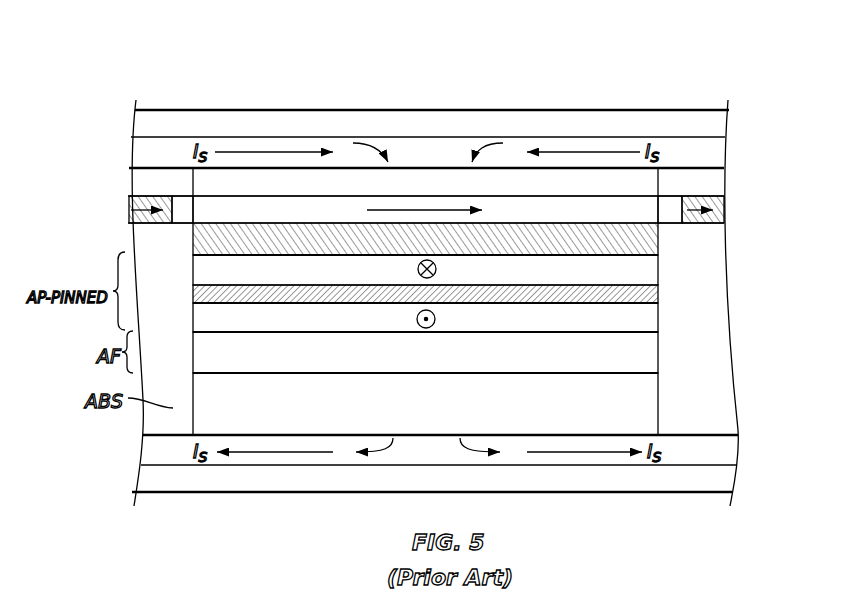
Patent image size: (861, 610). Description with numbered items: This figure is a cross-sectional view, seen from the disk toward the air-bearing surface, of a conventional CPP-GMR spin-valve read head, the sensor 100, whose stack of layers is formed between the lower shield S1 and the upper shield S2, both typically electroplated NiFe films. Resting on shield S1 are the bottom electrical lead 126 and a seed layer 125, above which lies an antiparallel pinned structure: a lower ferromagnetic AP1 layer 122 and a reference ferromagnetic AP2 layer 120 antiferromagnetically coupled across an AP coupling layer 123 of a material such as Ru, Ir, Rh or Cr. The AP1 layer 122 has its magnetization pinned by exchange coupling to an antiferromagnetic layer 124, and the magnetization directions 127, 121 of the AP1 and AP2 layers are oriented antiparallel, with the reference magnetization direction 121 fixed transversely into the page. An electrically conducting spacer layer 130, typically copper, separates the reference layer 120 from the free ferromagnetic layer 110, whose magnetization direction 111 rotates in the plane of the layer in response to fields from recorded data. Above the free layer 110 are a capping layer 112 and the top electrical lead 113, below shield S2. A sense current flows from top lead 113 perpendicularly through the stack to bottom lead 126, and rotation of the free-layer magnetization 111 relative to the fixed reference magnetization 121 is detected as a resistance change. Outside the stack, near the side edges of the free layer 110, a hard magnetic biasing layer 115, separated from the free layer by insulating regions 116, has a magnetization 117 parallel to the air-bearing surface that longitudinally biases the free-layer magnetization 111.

The sensor 100 is at (690, 70).
The free ferromagnetic layer 110 is at (596, 212).
The magnetization direction of free layer 111 is at (368, 211).
The capping layer 112 is at (217, 187).
The top electrical lead 113 is at (710, 156).
The hard magnetic biasing layer 115 is at (137, 204).
The insulating regions 116 is at (182, 211).
The magnetization of biasing layer 117 is at (140, 211).
The reference ferromagnetic layer 120 is at (637, 268).
The magnetization direction of reference layer 121 is at (437, 270).
The lower ferromagnetic (AP1) layer 122 is at (637, 320).
The AP coupling (APC) layer 123 is at (658, 295).
The antiferromagnetic (AF) layer 124 is at (637, 353).
The seed layer 125 is at (637, 393).
The bottom electrical lead 126 is at (728, 449).
The magnetization direction of AP1 layer 127 is at (436, 319).
The spacer layer 130 is at (637, 244).
The lower shield S1 is at (720, 478).
The upper shield S2 is at (705, 126).